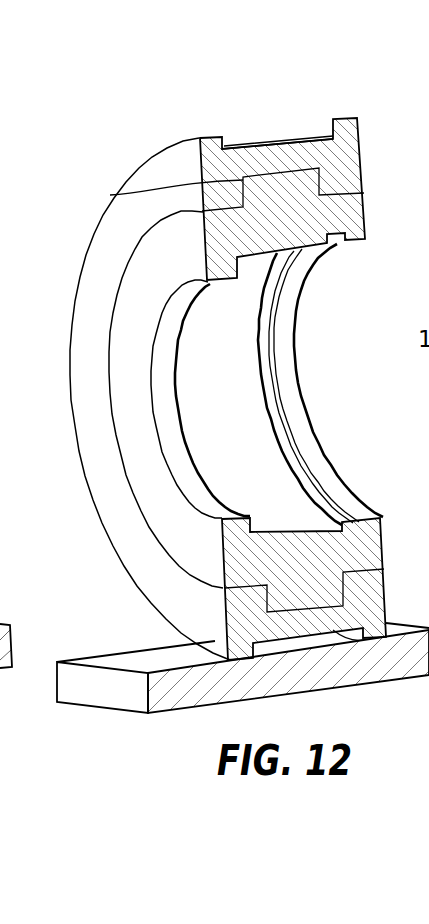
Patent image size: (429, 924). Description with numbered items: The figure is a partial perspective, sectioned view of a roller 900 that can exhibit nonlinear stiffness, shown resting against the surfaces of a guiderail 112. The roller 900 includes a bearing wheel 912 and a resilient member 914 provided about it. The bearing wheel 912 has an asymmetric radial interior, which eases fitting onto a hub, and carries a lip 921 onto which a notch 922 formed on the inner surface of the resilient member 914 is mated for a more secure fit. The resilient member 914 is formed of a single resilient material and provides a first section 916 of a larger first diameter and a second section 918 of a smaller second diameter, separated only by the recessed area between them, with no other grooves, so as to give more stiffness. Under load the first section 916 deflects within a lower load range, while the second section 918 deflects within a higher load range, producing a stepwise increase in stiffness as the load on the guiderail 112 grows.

The guiderail 112 is at (105, 688).
The roller 900 is at (327, 366).
The bearing wheel 912 is at (145, 302).
The resilient member 914 is at (93, 408).
The first section 916 is at (208, 137).
The second section 918 is at (252, 142).
The lip 921 is at (287, 189).
The notch 922 is at (110, 195).